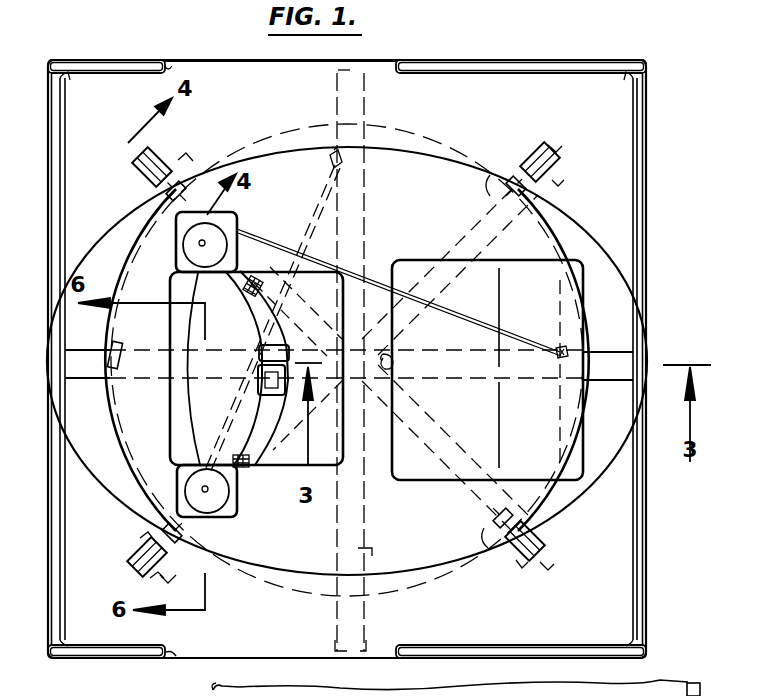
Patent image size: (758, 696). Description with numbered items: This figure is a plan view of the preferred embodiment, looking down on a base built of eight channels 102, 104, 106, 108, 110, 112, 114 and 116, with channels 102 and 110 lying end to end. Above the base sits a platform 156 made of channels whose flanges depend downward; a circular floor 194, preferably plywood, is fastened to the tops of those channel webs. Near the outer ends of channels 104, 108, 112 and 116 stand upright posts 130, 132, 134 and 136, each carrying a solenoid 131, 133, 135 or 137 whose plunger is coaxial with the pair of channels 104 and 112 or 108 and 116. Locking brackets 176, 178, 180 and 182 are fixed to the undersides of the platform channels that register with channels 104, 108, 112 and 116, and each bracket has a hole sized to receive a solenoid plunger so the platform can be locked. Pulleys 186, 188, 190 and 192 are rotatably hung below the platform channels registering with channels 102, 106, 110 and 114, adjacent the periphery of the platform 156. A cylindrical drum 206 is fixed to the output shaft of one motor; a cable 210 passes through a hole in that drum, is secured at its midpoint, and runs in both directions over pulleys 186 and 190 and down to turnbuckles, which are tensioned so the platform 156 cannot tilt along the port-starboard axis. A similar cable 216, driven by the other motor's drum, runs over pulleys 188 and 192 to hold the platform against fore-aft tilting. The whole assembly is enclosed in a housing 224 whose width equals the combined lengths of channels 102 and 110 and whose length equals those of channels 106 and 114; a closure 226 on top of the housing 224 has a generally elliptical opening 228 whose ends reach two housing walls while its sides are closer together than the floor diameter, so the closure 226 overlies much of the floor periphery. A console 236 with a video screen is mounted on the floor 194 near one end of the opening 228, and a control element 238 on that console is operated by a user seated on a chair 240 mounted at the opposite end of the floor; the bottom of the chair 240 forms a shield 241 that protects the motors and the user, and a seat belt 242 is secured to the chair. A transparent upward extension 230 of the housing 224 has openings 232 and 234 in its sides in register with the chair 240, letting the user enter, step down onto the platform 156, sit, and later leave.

The channel 102 is at (368, 97).
The channel 104 is at (527, 148).
The channel 106 is at (612, 380).
The channel 108 is at (560, 555).
The channel 110 is at (333, 633).
The channel 112 is at (134, 555).
The channel 114 is at (82, 380).
The channel 116 is at (135, 171).
The post 130 is at (561, 185).
The solenoid 131 is at (556, 152).
The post 132 is at (524, 582).
The solenoid 133 is at (546, 582).
The post 134 is at (140, 546).
The solenoid 135 is at (146, 573).
The post 136 is at (190, 158).
The solenoid 137 is at (152, 192).
The platform 156 is at (572, 251).
The locking bracket 176 is at (490, 180).
The locking bracket 178 is at (494, 552).
The locking bracket 180 is at (179, 555).
The locking bracket 182 is at (145, 229).
The pulley 186 is at (330, 150).
The pulley 188 is at (566, 346).
The pulley 190 is at (372, 552).
The pulley 192 is at (128, 372).
The circular floor 194 is at (428, 158).
The cylindrical drum 206 is at (240, 233).
The cable 210 is at (240, 356).
The cable 216 is at (108, 320).
The housing 224 is at (647, 572).
The closure 226 is at (620, 113).
The elliptical opening 228 is at (618, 279).
The transparent upward extension 230 is at (104, 67).
The opening 232 is at (171, 64).
The opening 234 is at (173, 659).
The console 236 is at (420, 474).
The control element 238 is at (395, 370).
The chair 240 is at (322, 470).
The shield 241 is at (240, 226).
The seat belt 242 is at (248, 470).